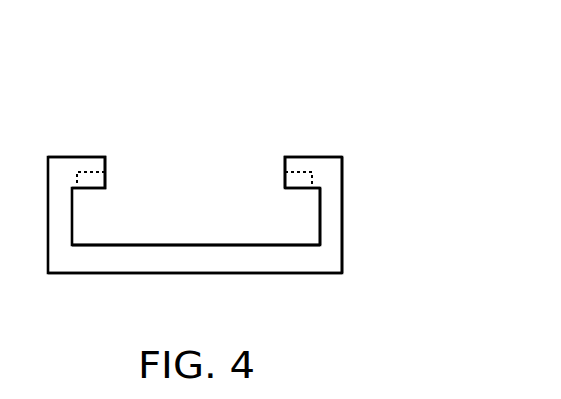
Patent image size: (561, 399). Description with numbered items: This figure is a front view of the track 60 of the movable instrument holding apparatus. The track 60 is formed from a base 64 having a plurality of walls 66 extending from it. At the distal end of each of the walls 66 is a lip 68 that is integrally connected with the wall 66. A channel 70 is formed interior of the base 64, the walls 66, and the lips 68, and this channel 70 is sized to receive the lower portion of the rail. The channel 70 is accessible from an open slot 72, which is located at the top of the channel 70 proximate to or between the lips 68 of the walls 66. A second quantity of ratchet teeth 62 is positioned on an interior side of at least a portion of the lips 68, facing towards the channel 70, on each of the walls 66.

The track 60 is at (232, 137).
The second quantity of ratchet teeth 62 is at (302, 178).
The base 64 is at (237, 262).
The walls 66 is at (337, 215).
The lip 68 is at (305, 157).
The channel 70 is at (202, 233).
The open slot 72 is at (173, 178).